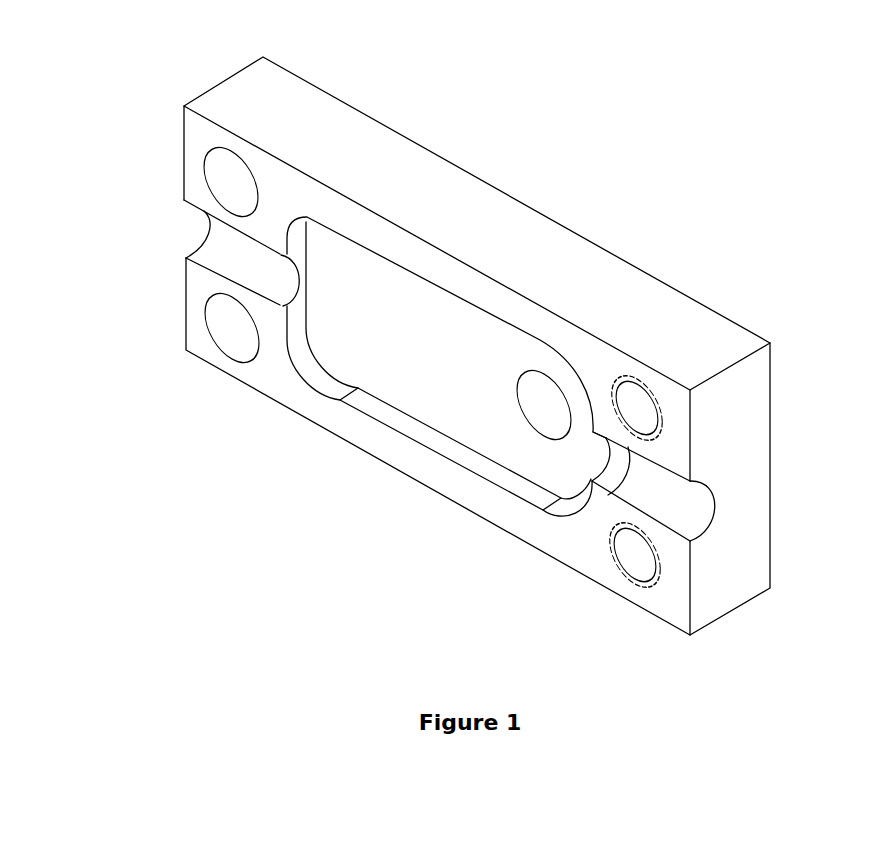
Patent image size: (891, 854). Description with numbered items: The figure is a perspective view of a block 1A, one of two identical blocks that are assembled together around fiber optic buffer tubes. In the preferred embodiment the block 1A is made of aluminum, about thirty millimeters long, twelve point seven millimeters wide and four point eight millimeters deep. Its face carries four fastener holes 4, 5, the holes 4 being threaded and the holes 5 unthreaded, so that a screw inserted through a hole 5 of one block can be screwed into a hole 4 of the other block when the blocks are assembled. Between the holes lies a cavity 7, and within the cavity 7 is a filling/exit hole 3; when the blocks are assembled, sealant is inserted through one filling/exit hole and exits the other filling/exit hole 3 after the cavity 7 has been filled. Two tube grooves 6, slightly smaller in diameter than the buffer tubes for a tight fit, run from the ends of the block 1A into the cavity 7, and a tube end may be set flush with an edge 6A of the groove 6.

The block 1A is at (607, 238).
The filling/exit hole 3 is at (543, 412).
The fastener hole 4 is at (222, 167).
The fastener hole 5 is at (630, 398).
The tube groove 6 is at (222, 250).
The edge of the groove 6A is at (617, 442).
The cavity 7 is at (378, 318).